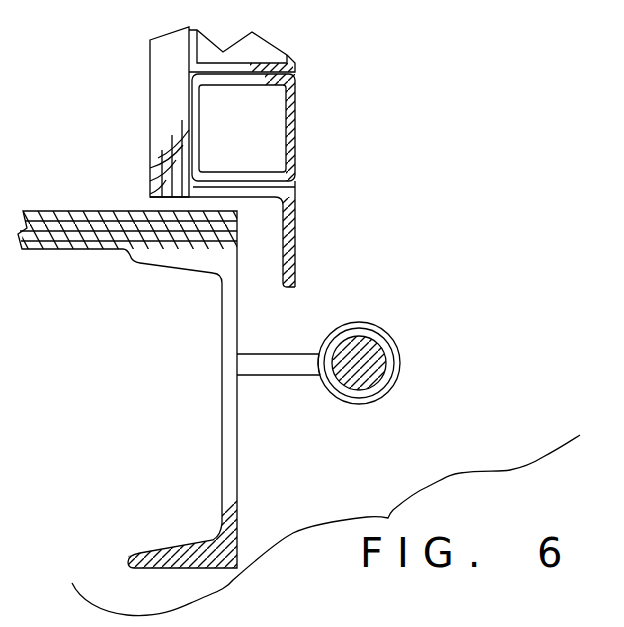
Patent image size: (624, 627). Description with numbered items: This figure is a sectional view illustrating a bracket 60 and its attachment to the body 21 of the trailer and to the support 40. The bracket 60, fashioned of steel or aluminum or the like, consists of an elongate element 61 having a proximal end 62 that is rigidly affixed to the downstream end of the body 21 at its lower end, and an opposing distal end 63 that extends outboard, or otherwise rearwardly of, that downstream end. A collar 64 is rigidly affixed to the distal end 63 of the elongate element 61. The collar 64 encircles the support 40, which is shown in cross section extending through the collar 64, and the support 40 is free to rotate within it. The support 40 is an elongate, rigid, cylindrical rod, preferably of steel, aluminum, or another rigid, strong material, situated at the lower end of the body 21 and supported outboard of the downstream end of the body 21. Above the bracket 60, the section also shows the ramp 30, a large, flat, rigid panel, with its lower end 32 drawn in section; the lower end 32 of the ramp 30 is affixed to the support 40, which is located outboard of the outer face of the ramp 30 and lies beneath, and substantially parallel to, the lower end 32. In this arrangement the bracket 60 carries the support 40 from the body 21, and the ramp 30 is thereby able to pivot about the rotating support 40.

The body 21 is at (242, 525).
The ramp 30 is at (293, 62).
The lower end 32 is at (297, 155).
The support 40 is at (387, 394).
The bracket 60 is at (304, 355).
The elongate element 61 is at (275, 361).
The proximal end 62 is at (248, 366).
The distal end 63 is at (310, 368).
The collar 64 is at (390, 338).